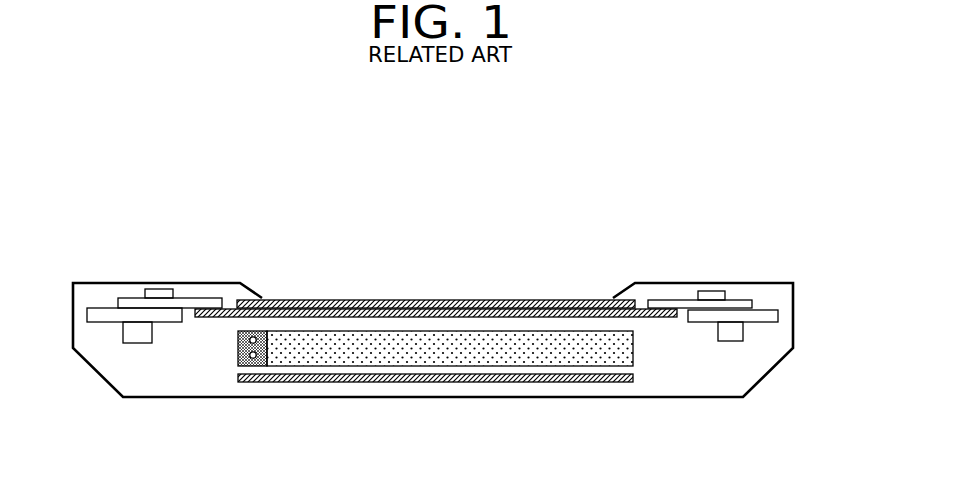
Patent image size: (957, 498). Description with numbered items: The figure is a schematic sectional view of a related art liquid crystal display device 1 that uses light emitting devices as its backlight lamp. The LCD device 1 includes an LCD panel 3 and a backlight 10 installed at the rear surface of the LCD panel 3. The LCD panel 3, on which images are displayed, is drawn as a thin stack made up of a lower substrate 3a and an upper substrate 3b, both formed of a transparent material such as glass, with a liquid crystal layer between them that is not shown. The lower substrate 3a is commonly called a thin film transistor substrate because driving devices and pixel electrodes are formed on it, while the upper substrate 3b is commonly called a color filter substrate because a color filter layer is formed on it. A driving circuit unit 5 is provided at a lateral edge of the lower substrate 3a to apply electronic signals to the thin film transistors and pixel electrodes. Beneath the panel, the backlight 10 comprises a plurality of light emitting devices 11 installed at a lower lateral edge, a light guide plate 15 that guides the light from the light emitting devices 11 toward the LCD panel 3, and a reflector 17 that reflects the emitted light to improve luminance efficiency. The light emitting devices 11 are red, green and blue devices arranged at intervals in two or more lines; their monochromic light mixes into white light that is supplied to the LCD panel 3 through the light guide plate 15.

The LCD device 1 is at (72, 253).
The LCD panel 3 is at (436, 276).
The lower substrate 3a is at (367, 300).
The upper substrate 3b is at (442, 309).
The driving circuit unit 5 is at (760, 302).
The backlight 10 is at (461, 355).
The light emitting devices 11 is at (253, 358).
The light guide plate 15 is at (565, 337).
The reflector 17 is at (465, 382).